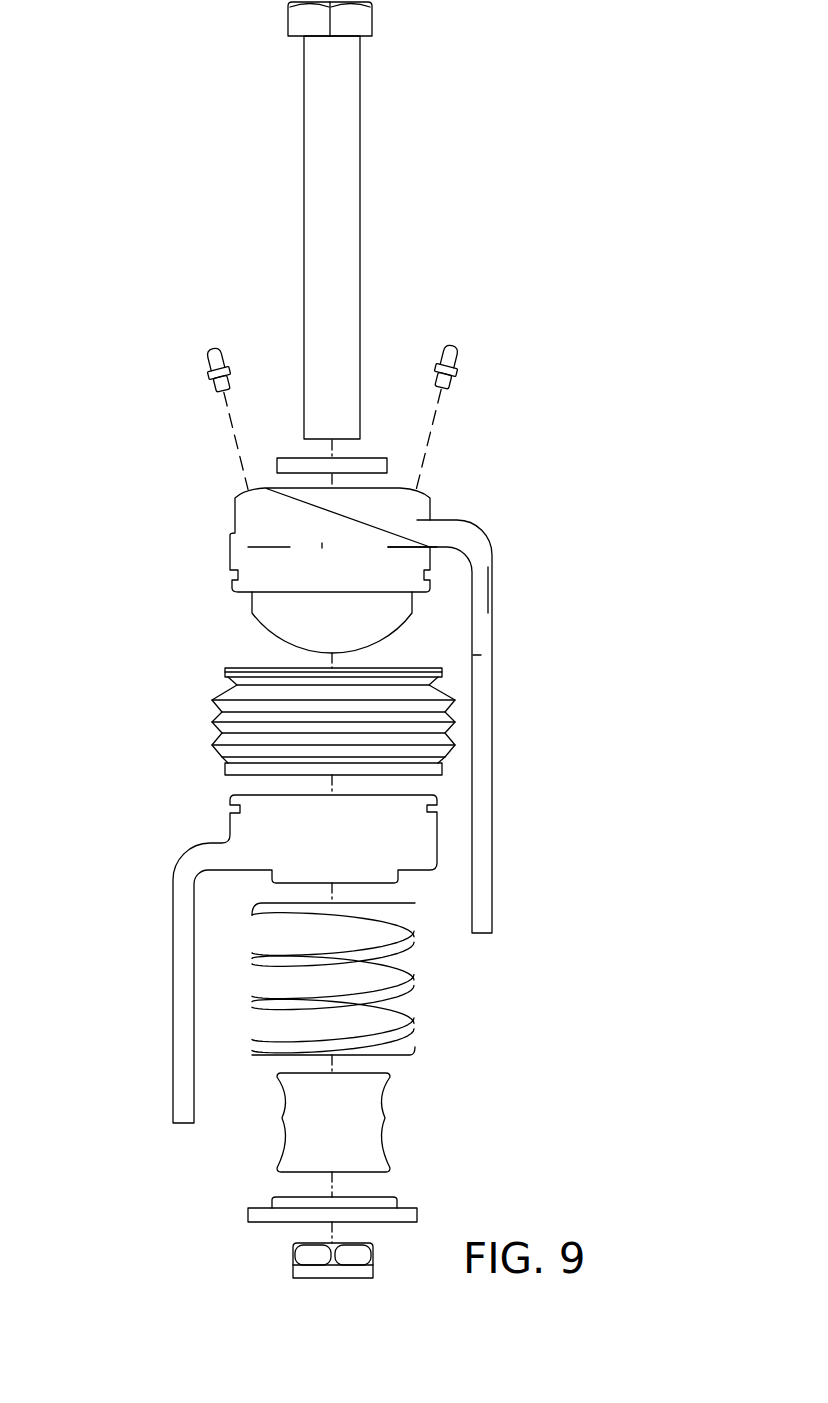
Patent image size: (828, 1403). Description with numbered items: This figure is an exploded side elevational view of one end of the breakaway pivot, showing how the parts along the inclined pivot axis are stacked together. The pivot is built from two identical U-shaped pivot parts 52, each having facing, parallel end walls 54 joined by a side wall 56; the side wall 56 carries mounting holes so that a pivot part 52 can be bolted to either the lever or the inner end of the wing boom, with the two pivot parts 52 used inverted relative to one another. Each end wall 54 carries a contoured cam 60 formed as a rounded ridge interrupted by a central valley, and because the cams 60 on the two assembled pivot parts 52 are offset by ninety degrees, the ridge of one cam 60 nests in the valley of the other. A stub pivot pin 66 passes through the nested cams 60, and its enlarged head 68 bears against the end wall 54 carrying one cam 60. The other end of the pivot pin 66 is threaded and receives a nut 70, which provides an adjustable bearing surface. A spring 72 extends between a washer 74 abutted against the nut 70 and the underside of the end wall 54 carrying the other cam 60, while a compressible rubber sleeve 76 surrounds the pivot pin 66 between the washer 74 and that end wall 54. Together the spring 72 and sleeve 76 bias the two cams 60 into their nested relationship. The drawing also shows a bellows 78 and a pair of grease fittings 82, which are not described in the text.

The pivot part 52 is at (329, 821).
The end wall 54 is at (438, 530).
The side wall 56 is at (485, 793).
The contoured cam 60 is at (295, 613).
The stub pivot pin 66 is at (350, 239).
The enlarged head 68 is at (362, 18).
The nut 70 is at (375, 1253).
The spring 72 is at (415, 968).
The washer 74 is at (393, 1205).
The compressible rubber sleeve 76 is at (347, 1115).
The bellows 78 is at (220, 693).
The grease fittings 82 is at (213, 346).